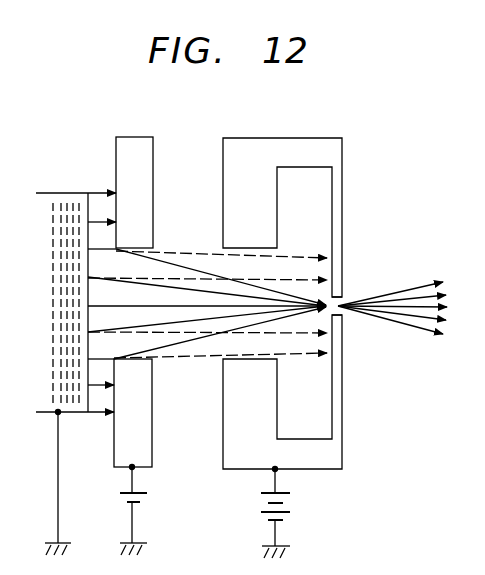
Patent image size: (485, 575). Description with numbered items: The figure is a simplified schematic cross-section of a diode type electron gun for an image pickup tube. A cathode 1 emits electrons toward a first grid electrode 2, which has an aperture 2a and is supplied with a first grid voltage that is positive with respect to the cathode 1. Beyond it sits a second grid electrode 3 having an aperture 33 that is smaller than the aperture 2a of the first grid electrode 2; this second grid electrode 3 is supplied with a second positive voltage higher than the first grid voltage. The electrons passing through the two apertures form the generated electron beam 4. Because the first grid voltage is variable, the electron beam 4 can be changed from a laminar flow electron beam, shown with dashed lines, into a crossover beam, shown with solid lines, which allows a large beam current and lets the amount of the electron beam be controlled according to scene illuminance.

The cathode 1 is at (66, 191).
The first grid electrode 2 is at (135, 138).
The aperture 2a is at (143, 265).
The second grid electrode 3 is at (282, 138).
The aperture 33 is at (338, 304).
The electron beam 4 is at (398, 291).